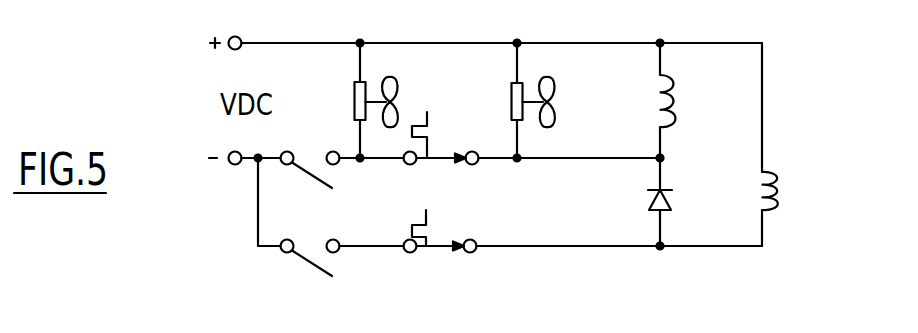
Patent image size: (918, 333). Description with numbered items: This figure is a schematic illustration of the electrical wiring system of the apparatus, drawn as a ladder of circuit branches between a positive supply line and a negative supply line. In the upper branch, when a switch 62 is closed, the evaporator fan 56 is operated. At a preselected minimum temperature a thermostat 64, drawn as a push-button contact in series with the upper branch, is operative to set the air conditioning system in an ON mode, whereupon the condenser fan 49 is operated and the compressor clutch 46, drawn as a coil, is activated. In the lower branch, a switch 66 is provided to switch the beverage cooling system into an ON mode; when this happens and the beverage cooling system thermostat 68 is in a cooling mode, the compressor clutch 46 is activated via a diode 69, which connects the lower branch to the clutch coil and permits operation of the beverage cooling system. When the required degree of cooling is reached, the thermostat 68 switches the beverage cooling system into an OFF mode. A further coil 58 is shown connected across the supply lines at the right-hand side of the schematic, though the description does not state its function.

The evaporator fan 56 is at (354, 97).
The condenser fan 49 is at (512, 97).
The compressor clutch 46 is at (660, 87).
The relay coil 58 is at (762, 182).
The diode 69 is at (650, 200).
The switch 62 is at (312, 180).
The switch 66 is at (311, 266).
The thermostat 64 is at (441, 161).
The beverage cooling system thermostat 68 is at (441, 249).